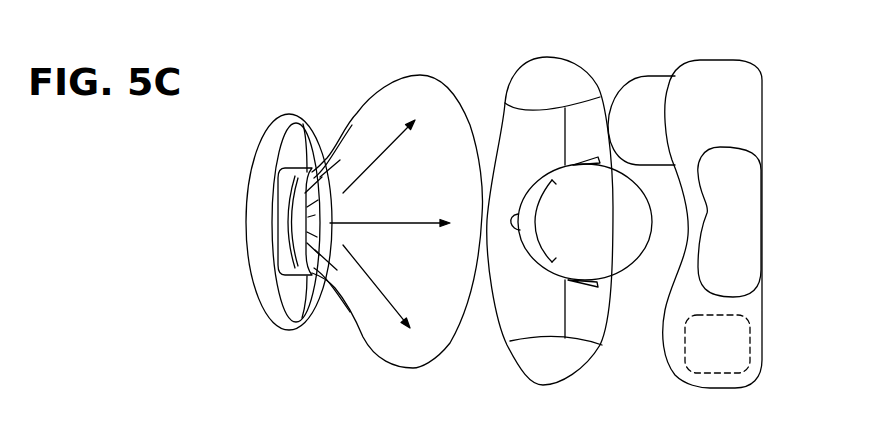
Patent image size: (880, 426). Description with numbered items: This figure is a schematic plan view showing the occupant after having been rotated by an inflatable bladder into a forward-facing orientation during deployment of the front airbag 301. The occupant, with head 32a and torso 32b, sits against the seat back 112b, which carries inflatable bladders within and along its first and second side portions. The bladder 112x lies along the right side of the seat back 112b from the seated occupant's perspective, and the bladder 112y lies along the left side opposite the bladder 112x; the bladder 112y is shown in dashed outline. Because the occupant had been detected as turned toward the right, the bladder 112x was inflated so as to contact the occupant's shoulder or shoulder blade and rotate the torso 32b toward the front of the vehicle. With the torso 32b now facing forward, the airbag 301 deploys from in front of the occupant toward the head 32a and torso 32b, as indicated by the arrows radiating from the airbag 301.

The front airbag 301 is at (415, 90).
The head 32a is at (512, 221).
The torso 32b is at (537, 370).
The inflatable bladder 112x is at (667, 73).
The seat back 112b is at (763, 322).
The inflatable bladder 112y is at (732, 347).